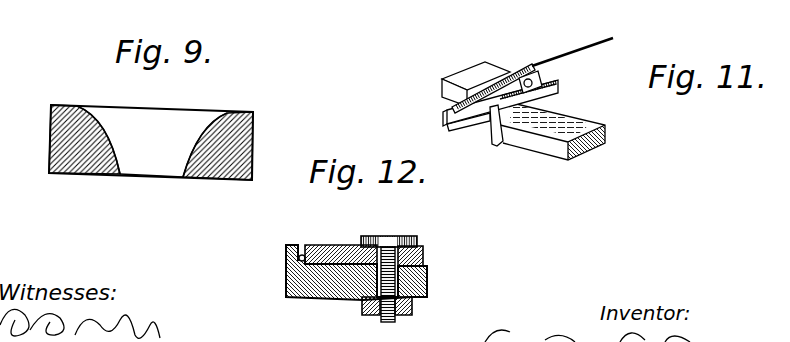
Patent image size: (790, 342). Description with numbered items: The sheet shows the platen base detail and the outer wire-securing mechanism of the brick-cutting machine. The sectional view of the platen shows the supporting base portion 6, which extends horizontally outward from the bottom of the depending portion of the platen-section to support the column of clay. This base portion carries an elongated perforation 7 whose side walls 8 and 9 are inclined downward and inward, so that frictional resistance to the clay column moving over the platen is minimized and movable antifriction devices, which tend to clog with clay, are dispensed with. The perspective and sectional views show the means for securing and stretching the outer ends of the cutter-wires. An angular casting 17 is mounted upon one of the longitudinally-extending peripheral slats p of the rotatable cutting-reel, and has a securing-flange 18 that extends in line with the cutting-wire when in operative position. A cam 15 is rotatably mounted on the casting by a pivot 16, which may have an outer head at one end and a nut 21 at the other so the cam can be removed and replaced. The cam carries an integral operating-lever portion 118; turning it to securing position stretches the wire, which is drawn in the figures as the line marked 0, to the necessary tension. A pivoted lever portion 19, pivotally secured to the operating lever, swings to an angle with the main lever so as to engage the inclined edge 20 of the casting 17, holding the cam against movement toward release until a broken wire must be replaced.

In FIG. 9, the supporting base portion 6 is at (50, 132).
In FIG. 9, the elongated perforation 7 is at (151, 159).
In FIG. 9, the side wall 8 is at (101, 112).
In FIG. 9, the side wall 9 is at (210, 116).
In FIG. 11, the integral operating-lever portion 118 is at (463, 75).
In FIG. 11, the pivot 16 is at (524, 81).
In FIG. 12, the pivot 16 is at (400, 240).
In FIG. 11, the securing-flange 18 is at (535, 66).
In FIG. 12, the securing-flange 18 is at (287, 245).
In FIG. 11, the rod 0 is at (604, 34).
In FIG. 12, the rod 0 is at (303, 255).
In FIG. 11, the cam 15 is at (558, 79).
In FIG. 12, the cam 15 is at (423, 252).
In FIG. 11, the angular casting 17 is at (561, 90).
In FIG. 12, the angular casting 17 is at (427, 282).
In FIG. 11, the inclined edge 20 is at (463, 126).
In FIG. 11, the pivoted lever portion 19 is at (499, 130).
In FIG. 11, the peripheral slat p is at (588, 145).
In FIG. 12, the nut 21 is at (412, 312).